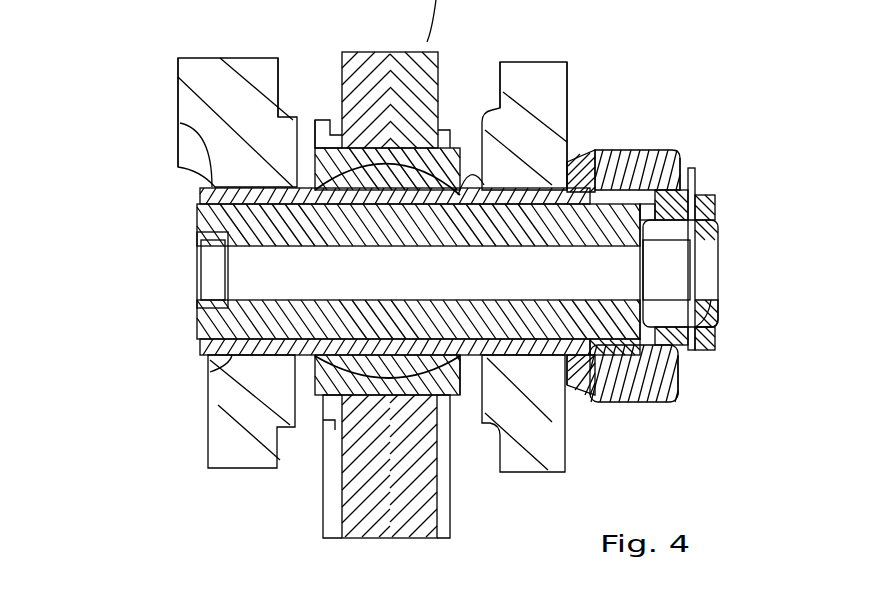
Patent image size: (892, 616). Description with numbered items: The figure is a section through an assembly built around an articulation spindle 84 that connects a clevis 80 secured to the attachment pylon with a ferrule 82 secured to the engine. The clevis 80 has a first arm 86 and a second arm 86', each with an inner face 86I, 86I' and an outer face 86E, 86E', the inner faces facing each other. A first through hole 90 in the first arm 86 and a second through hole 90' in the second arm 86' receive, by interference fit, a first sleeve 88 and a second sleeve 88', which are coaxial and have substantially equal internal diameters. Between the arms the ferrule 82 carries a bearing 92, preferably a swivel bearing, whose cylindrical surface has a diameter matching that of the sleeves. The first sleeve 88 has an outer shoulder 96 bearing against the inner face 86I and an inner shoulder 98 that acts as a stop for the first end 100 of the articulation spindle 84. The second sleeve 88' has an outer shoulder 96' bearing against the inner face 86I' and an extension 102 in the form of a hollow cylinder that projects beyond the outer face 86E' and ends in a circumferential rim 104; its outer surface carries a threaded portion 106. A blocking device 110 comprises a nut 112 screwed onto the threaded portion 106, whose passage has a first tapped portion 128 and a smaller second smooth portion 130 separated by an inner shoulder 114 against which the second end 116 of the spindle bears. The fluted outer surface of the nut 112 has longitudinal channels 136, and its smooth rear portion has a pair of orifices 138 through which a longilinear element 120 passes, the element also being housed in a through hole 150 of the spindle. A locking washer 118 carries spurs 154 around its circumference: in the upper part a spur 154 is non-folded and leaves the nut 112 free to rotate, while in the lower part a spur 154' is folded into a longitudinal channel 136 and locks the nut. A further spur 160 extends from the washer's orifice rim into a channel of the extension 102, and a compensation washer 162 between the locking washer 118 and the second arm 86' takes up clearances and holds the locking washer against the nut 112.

The clevis 80 is at (588, 103).
The ferrule 82 is at (342, 497).
The articulation spindle 84 is at (290, 358).
The first arm 86 is at (237, 93).
The outer face of first arm 86E is at (126, 110).
The inner face of first arm 86I is at (303, 58).
The second arm 86' is at (529, 95).
The outer face of second arm 86E' is at (607, 100).
The inner face of second arm 86I' is at (491, 54).
The first sleeve 88 is at (207, 411).
The second sleeve 88' is at (523, 440).
The first through hole 90 is at (347, 173).
The second through hole 90' is at (468, 138).
The bearing 92 is at (376, 142).
The outer shoulder 96 is at (314, 121).
The outer shoulder 96' is at (475, 434).
The inner shoulder 98 is at (200, 340).
The first end of articulation spindle 100 is at (197, 223).
The extension 102 is at (623, 190).
The circumferential rim 104 is at (688, 168).
The threaded portion 106 is at (675, 160).
The blocking device 110 is at (696, 396).
The nut 112 is at (642, 404).
The inner shoulder 114 is at (700, 358).
The second end of articulation spindle 116 is at (613, 402).
The locking washer 118 is at (598, 132).
The longilinear element 120 is at (697, 185).
The first tapped portion 128 is at (608, 192).
The second smooth portion 130 is at (690, 228).
The longitudinal channel 136 is at (665, 402).
The orifices 138 is at (697, 208).
The through hole 150 is at (700, 305).
The spur 154 is at (668, 111).
The spur in folded position 154' is at (594, 428).
The spur 160 is at (628, 316).
The compensation washer 162 is at (574, 412).